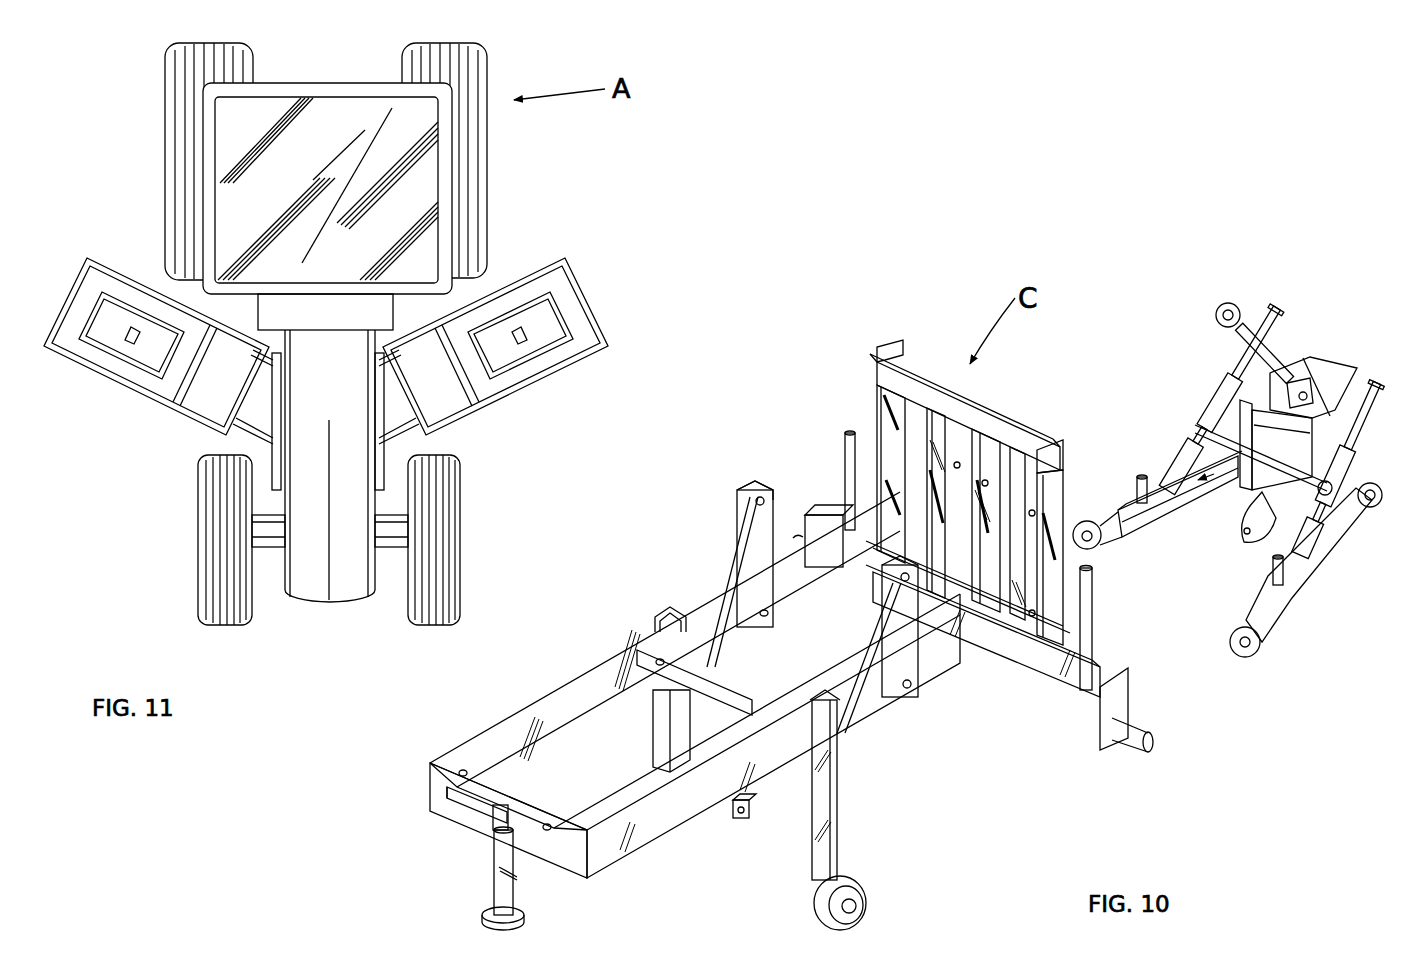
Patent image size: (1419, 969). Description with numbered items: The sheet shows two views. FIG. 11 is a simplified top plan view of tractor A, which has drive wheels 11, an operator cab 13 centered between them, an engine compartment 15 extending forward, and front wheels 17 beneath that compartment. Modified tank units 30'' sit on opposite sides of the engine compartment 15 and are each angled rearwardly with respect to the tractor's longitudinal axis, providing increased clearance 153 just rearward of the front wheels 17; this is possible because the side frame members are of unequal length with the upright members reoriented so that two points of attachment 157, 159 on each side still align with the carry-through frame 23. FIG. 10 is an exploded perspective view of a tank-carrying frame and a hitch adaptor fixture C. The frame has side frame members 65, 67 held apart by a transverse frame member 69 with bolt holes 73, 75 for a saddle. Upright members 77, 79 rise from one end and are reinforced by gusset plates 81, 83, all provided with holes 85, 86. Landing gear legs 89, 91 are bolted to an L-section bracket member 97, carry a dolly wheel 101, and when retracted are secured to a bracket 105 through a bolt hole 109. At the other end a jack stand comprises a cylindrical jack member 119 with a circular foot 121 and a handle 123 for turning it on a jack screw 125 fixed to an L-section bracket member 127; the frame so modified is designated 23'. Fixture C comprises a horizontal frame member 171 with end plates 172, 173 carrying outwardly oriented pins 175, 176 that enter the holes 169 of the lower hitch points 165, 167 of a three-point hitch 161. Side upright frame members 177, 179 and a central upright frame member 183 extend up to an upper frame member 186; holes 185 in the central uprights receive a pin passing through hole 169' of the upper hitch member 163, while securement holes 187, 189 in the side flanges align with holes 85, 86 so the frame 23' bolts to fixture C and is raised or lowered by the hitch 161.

In FIG. 11, the drive wheels 11 is at (165, 76).
In FIG. 11, the operator cab 13 is at (455, 138).
In FIG. 11, the engine compartment 15 is at (360, 473).
In FIG. 11, the front wheels 17 is at (198, 503).
In FIG. 11, the carry-through frame 23 is at (264, 517).
In FIG. 10, the modified frame 23' is at (678, 887).
In FIG. 11, the modified tank units 30'' is at (354, 315).
In FIG. 11, the clearance 153 is at (215, 440).
In FIG. 11, the point of attachment 157 is at (272, 365).
In FIG. 11, the point of attachment 159 is at (270, 444).
In FIG. 10, the side frame member 65 is at (522, 711).
In FIG. 10, the side frame member 67 is at (637, 862).
In FIG. 10, the transverse frame member 69 is at (747, 716).
In FIG. 10, the bolt hole 73 is at (752, 710).
In FIG. 10, the bolt hole 75 is at (460, 772).
In FIG. 10, the upright member 77 is at (738, 496).
In FIG. 10, the upright member 79 is at (896, 585).
In FIG. 10, the gusset plate 81 is at (735, 563).
In FIG. 10, the gusset plate 83 is at (918, 682).
In FIG. 10, the hole 85 is at (769, 613).
In FIG. 10, the hole 86 is at (756, 506).
In FIG. 10, the landing gear leg 89 is at (653, 760).
In FIG. 10, the landing gear leg 91 is at (839, 828).
In FIG. 10, the L-section bracket member 97 is at (656, 622).
In FIG. 10, the dolly wheel 101 is at (863, 889).
In FIG. 10, the bracket 105 is at (735, 816).
In FIG. 10, the bolt hole 109 is at (742, 819).
In FIG. 10, the cylindrical jack member 119 is at (494, 897).
In FIG. 10, the circular foot 121 is at (481, 916).
In FIG. 10, the handle 123 is at (494, 871).
In FIG. 10, the jack screw 125 is at (500, 823).
In FIG. 10, the L-section bracket member 127 is at (450, 793).
In FIG. 10, the hitch 161 is at (1226, 518).
In FIG. 10, the upper hitch member 163 is at (1233, 304).
In FIG. 10, the hitch point 165 is at (1088, 520).
In FIG. 10, the hitch point 167 is at (1258, 648).
In FIG. 10, the holes 169 is at (1205, 590).
In FIG. 10, the hole 169' is at (1279, 344).
In FIG. 10, the horizontal frame member 171 is at (1033, 678).
In FIG. 10, the plate 172 is at (816, 490).
In FIG. 10, the plate 173 is at (1112, 748).
In FIG. 10, the pin 175 is at (796, 533).
In FIG. 10, the pin 176 is at (1140, 744).
In FIG. 10, the upright frame member 177 is at (880, 425).
In FIG. 10, the upright frame member 179 is at (1063, 588).
In FIG. 10, the upright frame member 183 is at (988, 480).
In FIG. 10, the holes 185 is at (920, 420).
In FIG. 10, the upper frame member 186 is at (918, 440).
In FIG. 10, the securement hole 187 is at (1021, 625).
In FIG. 10, the securement hole 189 is at (1034, 511).